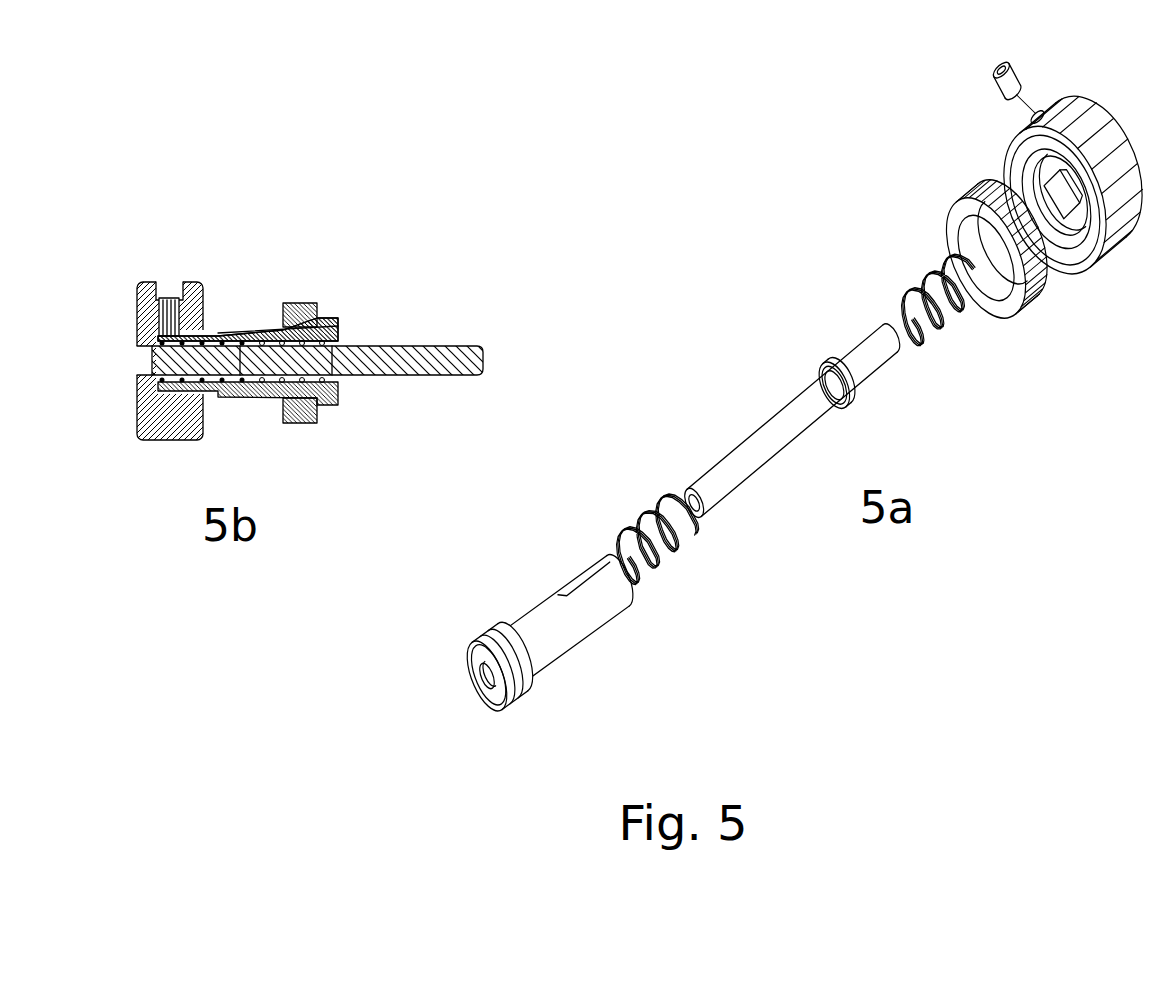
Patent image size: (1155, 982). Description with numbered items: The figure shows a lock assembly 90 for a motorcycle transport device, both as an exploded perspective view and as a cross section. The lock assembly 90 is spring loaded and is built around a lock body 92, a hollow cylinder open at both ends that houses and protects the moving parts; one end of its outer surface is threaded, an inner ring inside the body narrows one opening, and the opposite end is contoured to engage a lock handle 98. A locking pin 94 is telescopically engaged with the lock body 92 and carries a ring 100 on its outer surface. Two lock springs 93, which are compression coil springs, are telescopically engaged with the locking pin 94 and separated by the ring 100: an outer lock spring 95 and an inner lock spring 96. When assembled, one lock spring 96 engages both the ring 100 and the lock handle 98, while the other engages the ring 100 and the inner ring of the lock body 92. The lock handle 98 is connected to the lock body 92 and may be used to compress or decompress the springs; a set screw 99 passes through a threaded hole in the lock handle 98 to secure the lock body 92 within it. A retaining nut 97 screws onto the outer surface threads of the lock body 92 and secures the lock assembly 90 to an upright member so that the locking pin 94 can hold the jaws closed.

The lock assembly 90 is at (714, 259).
The lock body 92 is at (563, 617).
The lock spring 93 is at (620, 541).
The locking pin 94 is at (740, 463).
The outer lock spring 95 is at (907, 300).
The inner lock spring 96 is at (658, 503).
The retaining nut 97 is at (946, 205).
The lock handle 98 is at (1023, 117).
The set screw 99 is at (1013, 83).
The ring 100 is at (857, 397).